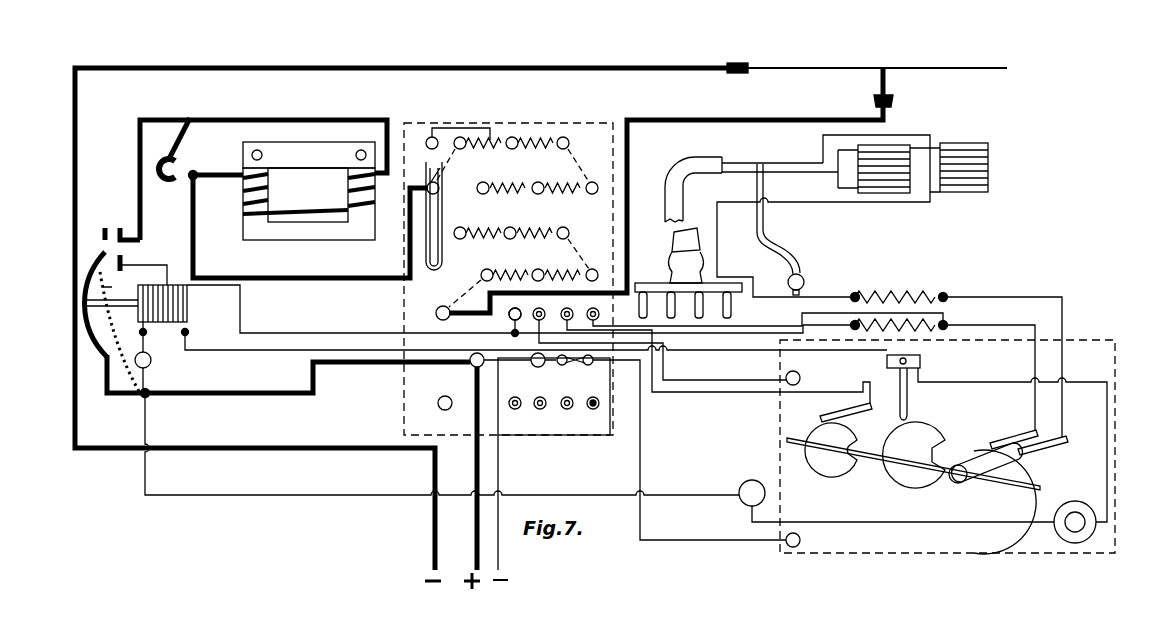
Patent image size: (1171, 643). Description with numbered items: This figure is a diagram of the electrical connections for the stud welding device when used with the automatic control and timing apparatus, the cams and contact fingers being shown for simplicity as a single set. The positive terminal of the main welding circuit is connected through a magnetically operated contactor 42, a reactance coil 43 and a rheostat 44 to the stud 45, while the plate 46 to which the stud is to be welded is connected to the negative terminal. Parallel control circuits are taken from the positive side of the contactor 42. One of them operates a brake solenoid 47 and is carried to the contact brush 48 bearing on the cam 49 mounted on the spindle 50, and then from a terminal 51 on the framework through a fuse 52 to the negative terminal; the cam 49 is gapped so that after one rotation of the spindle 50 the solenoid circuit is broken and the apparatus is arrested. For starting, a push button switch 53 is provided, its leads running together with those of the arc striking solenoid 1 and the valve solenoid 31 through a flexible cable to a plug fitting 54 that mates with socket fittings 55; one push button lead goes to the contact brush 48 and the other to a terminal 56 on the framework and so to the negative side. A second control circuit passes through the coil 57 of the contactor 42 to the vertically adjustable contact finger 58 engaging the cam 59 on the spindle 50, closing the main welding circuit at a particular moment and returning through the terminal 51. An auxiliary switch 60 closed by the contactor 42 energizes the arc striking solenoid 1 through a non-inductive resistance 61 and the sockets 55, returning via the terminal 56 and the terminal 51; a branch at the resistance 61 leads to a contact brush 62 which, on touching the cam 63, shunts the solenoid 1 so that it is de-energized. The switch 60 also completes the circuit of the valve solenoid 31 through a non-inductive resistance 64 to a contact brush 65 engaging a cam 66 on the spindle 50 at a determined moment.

The arc striking solenoid 1 is at (888, 190).
The valve solenoid 31 is at (977, 190).
The magnetically operated contactor 42 is at (86, 297).
The reactance coil 43 is at (291, 152).
The rheostat 44 is at (537, 170).
The stud 45 is at (886, 84).
The plate 46 is at (768, 68).
The brake solenoid 47 is at (1070, 543).
The contact brush 48 is at (826, 416).
The cam 49 is at (835, 463).
The spindle 50 is at (992, 554).
The terminal 51 is at (793, 548).
The fuse 52 is at (575, 364).
The push button switch 53 is at (804, 281).
The plug fitting 54 is at (656, 283).
The socket fittings 55 is at (514, 322).
The terminal 56 is at (800, 377).
The coil 57 is at (138, 312).
The vertically adjustable contact finger 58 is at (908, 401).
The cam 59 is at (905, 475).
The auxiliary switch 60 is at (115, 262).
The non-inductive resistance 61 is at (928, 328).
The contact brush 62 is at (1018, 433).
The cam 63 is at (968, 490).
The non-inductive resistance 64 is at (892, 292).
The contact brush 65 is at (1050, 450).
The cam 66 is at (1000, 477).